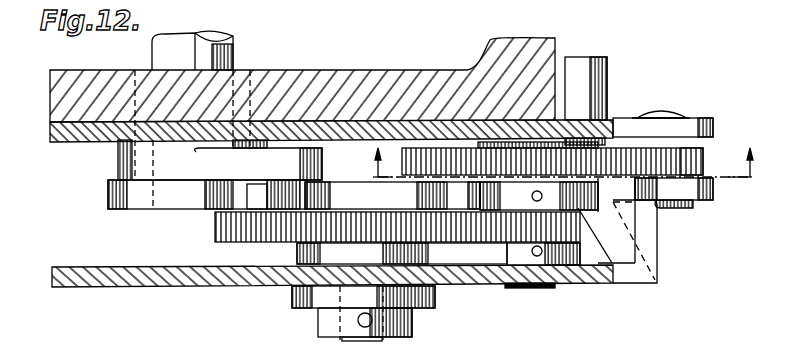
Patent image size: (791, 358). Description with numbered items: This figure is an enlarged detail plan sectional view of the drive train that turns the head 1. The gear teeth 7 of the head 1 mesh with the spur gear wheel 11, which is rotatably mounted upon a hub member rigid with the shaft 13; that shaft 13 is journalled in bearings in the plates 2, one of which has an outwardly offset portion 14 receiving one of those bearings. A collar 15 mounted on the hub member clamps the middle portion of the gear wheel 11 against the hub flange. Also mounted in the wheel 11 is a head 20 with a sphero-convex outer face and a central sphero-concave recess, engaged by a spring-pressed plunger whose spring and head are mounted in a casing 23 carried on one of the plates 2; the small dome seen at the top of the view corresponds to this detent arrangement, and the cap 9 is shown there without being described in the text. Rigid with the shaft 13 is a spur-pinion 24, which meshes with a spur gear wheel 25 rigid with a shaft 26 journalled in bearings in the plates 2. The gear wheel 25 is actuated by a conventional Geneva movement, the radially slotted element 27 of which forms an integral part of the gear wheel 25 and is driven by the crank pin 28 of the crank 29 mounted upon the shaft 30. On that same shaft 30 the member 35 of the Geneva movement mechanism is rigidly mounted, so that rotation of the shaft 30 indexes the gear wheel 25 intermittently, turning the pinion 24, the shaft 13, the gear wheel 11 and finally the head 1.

The head 1 is at (672, 112).
The plates 2 is at (66, 143).
The gear teeth 7 is at (705, 150).
The cap 9 is at (660, 112).
The spur gear wheel 11 is at (618, 147).
The shaft 13 is at (540, 300).
The outwardly offset portion 14 is at (478, 286).
The collar 15 is at (539, 196).
The head 20 is at (596, 140).
The casing 23 is at (607, 58).
The spur-pinion 24 is at (576, 282).
The spur gear wheel 25 is at (452, 246).
The shaft 26 is at (362, 341).
The radially slotted element 27 is at (392, 195).
The crank pin 28 is at (284, 208).
The crank 29 is at (220, 139).
The shaft 30 is at (234, 45).
The member of the Geneva movement mechanism 35 is at (127, 196).